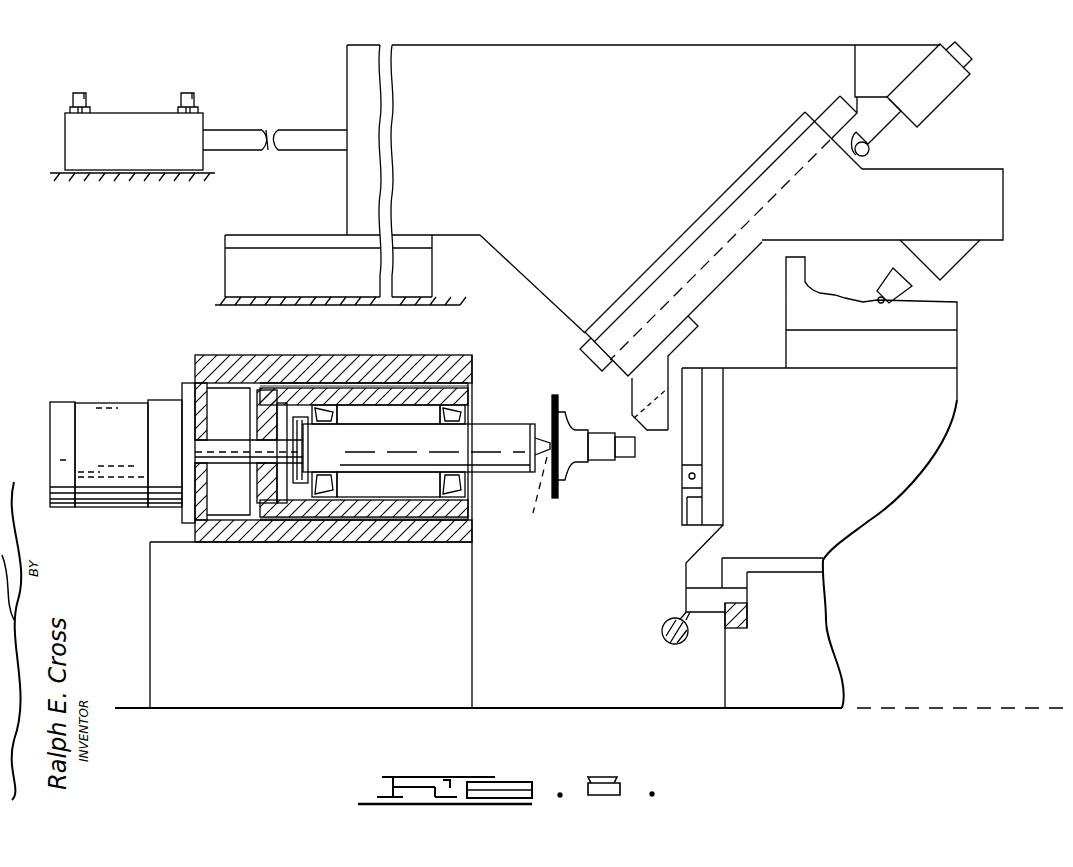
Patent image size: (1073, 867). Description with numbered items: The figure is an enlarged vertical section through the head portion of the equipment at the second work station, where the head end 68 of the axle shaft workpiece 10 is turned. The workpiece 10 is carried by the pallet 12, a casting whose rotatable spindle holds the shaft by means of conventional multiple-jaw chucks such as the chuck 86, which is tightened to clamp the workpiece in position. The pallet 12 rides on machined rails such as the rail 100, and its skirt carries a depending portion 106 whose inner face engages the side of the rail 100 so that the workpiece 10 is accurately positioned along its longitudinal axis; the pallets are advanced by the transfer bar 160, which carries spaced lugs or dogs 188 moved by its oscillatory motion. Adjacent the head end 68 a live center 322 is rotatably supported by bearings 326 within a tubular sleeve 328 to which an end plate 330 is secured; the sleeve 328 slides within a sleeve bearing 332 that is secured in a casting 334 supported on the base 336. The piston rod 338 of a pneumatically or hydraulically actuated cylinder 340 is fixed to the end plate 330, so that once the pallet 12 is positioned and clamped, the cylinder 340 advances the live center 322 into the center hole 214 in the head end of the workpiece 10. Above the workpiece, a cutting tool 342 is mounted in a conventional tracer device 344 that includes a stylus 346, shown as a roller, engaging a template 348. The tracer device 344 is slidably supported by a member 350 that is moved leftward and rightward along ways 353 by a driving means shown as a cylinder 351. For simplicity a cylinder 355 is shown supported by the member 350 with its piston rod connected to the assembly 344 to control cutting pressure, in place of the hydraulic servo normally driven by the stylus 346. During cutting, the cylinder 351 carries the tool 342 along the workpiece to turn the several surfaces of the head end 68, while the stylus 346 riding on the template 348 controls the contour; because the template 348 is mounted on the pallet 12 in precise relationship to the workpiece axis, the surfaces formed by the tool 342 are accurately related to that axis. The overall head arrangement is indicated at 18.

The cylinder 351 is at (122, 121).
The ways 353 is at (275, 222).
The member 350 is at (625, 104).
The cylinder 355 is at (962, 62).
The grinding machine assembly 18 is at (997, 105).
The tracer device 344 is at (713, 299).
The template 348 is at (950, 322).
The stylus 346 is at (878, 302).
The multiple-jaw chuck 86 is at (690, 368).
The cutting tool 342 is at (633, 430).
The pallet 12 is at (832, 419).
The depending portion 106 is at (700, 598).
The rail 100 is at (741, 629).
The dog 188 is at (676, 613).
The transfer bar 160 is at (662, 630).
The base 336 is at (366, 661).
The cylinder 340 is at (99, 408).
The piston rod 338 is at (196, 447).
The end plate 330 is at (254, 393).
The casting 334 is at (315, 358).
The sleeve bearing 332 is at (353, 384).
The tubular sleeve 328 is at (402, 392).
The bearings 326 is at (323, 497).
The live center 322 is at (400, 473).
The center hole 214 is at (550, 478).
The head end 68 is at (582, 472).
The axle shaft 10 is at (667, 473).